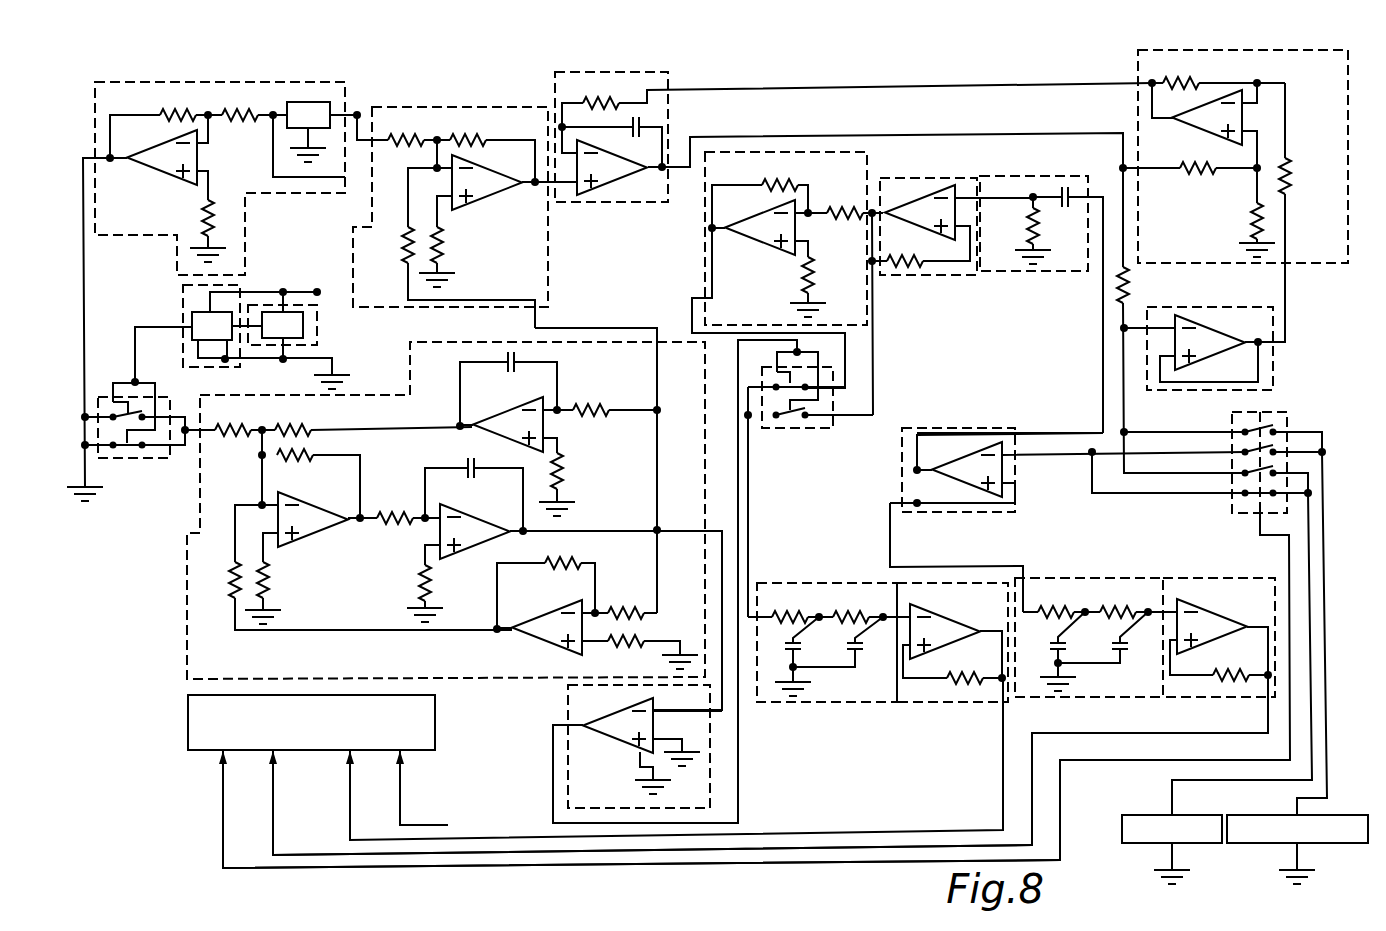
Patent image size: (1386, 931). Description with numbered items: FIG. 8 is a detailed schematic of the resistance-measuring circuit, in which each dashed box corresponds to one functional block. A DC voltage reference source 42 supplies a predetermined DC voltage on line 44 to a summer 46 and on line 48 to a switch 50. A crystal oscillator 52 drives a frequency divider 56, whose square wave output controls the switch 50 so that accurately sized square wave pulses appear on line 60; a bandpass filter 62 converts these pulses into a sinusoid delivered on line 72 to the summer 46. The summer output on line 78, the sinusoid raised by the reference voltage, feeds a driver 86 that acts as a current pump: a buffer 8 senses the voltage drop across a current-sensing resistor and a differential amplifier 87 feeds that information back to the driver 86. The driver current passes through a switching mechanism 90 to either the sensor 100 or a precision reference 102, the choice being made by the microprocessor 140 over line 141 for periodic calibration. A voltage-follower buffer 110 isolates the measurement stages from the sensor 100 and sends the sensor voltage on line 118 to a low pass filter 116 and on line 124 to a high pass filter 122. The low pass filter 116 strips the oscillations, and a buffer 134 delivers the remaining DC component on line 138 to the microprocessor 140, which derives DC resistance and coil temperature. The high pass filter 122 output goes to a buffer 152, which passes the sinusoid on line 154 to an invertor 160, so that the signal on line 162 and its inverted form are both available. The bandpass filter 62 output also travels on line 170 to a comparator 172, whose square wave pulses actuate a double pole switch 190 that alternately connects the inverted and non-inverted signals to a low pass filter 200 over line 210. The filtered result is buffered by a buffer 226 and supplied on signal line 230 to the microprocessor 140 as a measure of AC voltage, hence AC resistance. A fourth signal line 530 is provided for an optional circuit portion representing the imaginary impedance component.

The buffer 8 is at (1275, 375).
The DC voltage reference source 42 is at (205, 82).
The line 44 is at (345, 177).
The summer 46 is at (445, 107).
The line 48 is at (86, 262).
The switch 50 is at (100, 458).
The crystal oscillator 52 is at (318, 328).
The frequency divider 56 is at (182, 303).
The line 60 is at (173, 440).
The bandpass filter 62 is at (380, 679).
The line 72 is at (488, 307).
The line 78 is at (566, 184).
The driver 86 is at (551, 78).
The differential amplifier 87 is at (1136, 53).
The switching mechanism 90 is at (1255, 513).
The sensor 100 is at (1150, 815).
The reference 102 is at (1277, 815).
The buffer 110 is at (945, 428).
The low pass filter 116 is at (1075, 697).
The line 118 is at (935, 567).
The high pass filter 122 is at (1020, 271).
The line 124 is at (1103, 319).
The buffer 134 is at (1190, 697).
The line 138 is at (283, 855).
The microprocessor 140 is at (437, 716).
The line 141 is at (270, 868).
The buffer 152 is at (905, 275).
The line 154 is at (873, 212).
The invertor 160 is at (705, 221).
The line 162 is at (874, 326).
The line 170 is at (590, 530).
The comparator 172 is at (572, 808).
The switch 190 is at (800, 428).
The low pass filter 200 is at (810, 702).
The line 210 is at (750, 472).
The buffer 226 is at (925, 702).
The signal line 230 is at (495, 840).
The signal line 530 is at (440, 825).